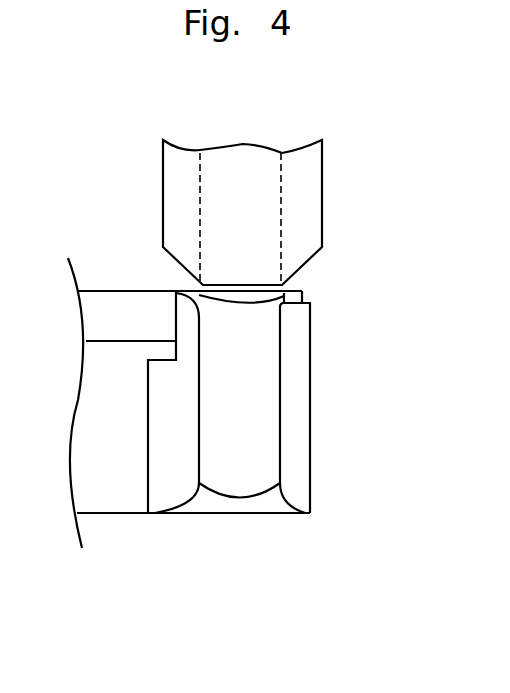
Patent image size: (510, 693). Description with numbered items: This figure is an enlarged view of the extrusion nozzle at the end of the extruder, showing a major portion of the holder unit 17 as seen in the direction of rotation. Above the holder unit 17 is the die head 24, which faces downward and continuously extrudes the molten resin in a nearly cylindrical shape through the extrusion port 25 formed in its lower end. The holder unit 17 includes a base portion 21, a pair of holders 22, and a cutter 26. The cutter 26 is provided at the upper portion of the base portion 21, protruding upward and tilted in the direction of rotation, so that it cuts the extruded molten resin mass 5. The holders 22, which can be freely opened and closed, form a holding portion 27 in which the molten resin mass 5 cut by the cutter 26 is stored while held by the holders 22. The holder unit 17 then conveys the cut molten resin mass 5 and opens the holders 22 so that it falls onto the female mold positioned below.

The die head 24 is at (163, 196).
The extrusion port 25 is at (197, 288).
The cutter 26 is at (330, 273).
The base portion 21 is at (97, 386).
The holders 22 is at (310, 420).
The molten resin mass 5 is at (262, 455).
The holding portion 27 is at (253, 507).
The holder unit 17 is at (283, 543).